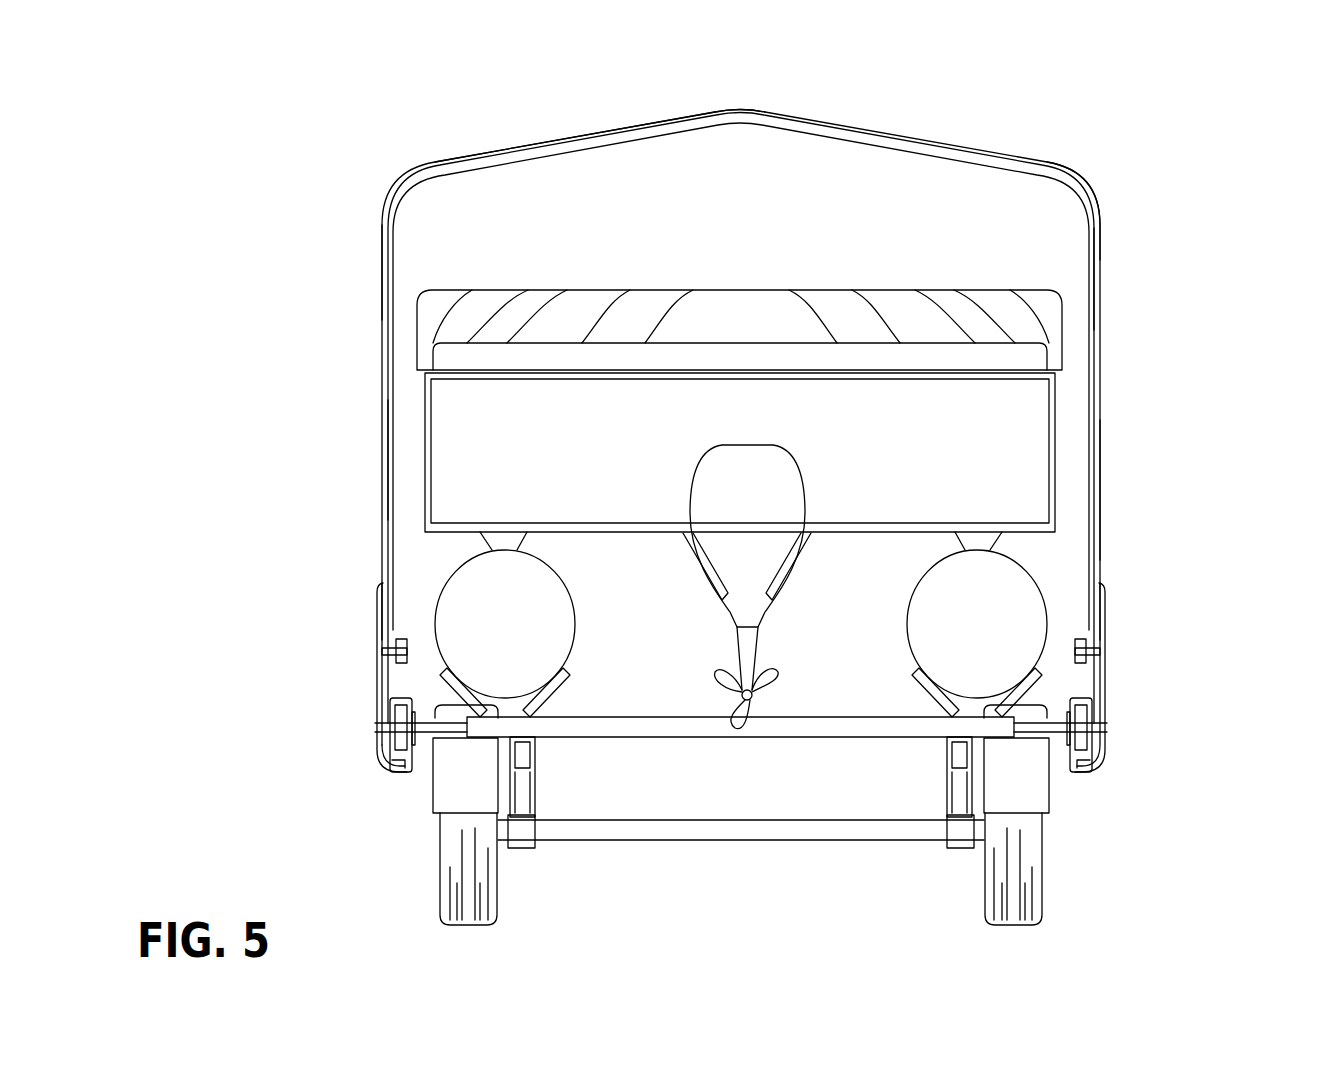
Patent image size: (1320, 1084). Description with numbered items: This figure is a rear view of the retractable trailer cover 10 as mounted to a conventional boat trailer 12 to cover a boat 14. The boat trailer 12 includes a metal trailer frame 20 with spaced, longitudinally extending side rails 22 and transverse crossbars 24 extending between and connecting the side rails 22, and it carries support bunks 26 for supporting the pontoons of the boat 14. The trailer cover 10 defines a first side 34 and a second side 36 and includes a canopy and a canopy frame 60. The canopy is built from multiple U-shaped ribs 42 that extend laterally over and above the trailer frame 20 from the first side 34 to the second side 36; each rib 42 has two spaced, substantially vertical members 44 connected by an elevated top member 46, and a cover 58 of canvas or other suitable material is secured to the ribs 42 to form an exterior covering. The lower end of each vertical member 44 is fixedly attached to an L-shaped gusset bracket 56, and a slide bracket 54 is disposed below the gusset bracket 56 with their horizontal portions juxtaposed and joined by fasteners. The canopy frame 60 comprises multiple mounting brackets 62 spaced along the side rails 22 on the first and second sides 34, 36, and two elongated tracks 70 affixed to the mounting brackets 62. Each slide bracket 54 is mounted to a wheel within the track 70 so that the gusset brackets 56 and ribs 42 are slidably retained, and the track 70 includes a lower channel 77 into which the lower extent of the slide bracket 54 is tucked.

The retractable trailer cover 10 is at (985, 142).
The boat trailer 12 is at (730, 848).
The boat 14 is at (1062, 427).
The trailer frame 20 is at (540, 802).
The side rails 22 is at (532, 752).
The transverse crossbars 24 is at (1036, 738).
The support bunks 26 is at (548, 678).
The first side 34 is at (388, 455).
The second side 36 is at (1098, 505).
The ribs 42 is at (545, 139).
The vertical members 44 is at (382, 295).
The top member 46 is at (693, 115).
The slide bracket 54 is at (382, 697).
The gusset bracket 56 is at (377, 607).
The cover 58 is at (1098, 250).
The canopy frame 60 is at (368, 725).
The mounting brackets 62 is at (445, 742).
The tracks 70 is at (398, 696).
The lower channel 77 is at (400, 768).